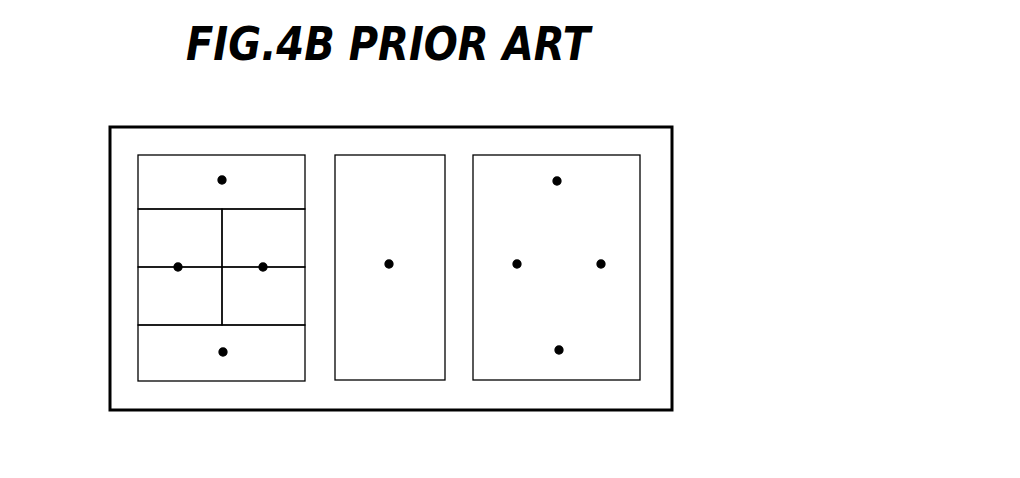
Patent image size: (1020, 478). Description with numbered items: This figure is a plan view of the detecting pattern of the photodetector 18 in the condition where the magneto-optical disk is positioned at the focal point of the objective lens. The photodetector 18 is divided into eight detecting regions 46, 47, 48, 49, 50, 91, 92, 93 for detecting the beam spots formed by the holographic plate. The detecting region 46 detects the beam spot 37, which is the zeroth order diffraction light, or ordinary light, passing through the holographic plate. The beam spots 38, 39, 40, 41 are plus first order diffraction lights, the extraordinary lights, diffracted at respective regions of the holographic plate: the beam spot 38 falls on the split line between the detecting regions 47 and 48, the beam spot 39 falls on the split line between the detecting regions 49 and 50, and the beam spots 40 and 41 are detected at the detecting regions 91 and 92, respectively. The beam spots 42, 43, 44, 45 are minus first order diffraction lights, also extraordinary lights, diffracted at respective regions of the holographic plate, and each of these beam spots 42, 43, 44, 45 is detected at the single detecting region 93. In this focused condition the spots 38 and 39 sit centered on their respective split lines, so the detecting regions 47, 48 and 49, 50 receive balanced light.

The photodetector 18 is at (675, 298).
The beam spot 37 is at (389, 260).
The beam spot 38 is at (178, 263).
The beam spot 39 is at (263, 263).
The beam spot 40 is at (226, 180).
The beam spot 41 is at (227, 352).
The beam spot 42 is at (517, 260).
The beam spot 43 is at (598, 261).
The beam spot 44 is at (561, 181).
The beam spot 45 is at (559, 346).
The detecting region 46 is at (390, 349).
The detecting region 47 is at (158, 242).
The detecting region 48 is at (161, 295).
The detecting region 49 is at (290, 235).
The detecting region 50 is at (289, 295).
The detecting region 91 is at (176, 181).
The detecting region 92 is at (188, 362).
The detecting region 93 is at (603, 352).